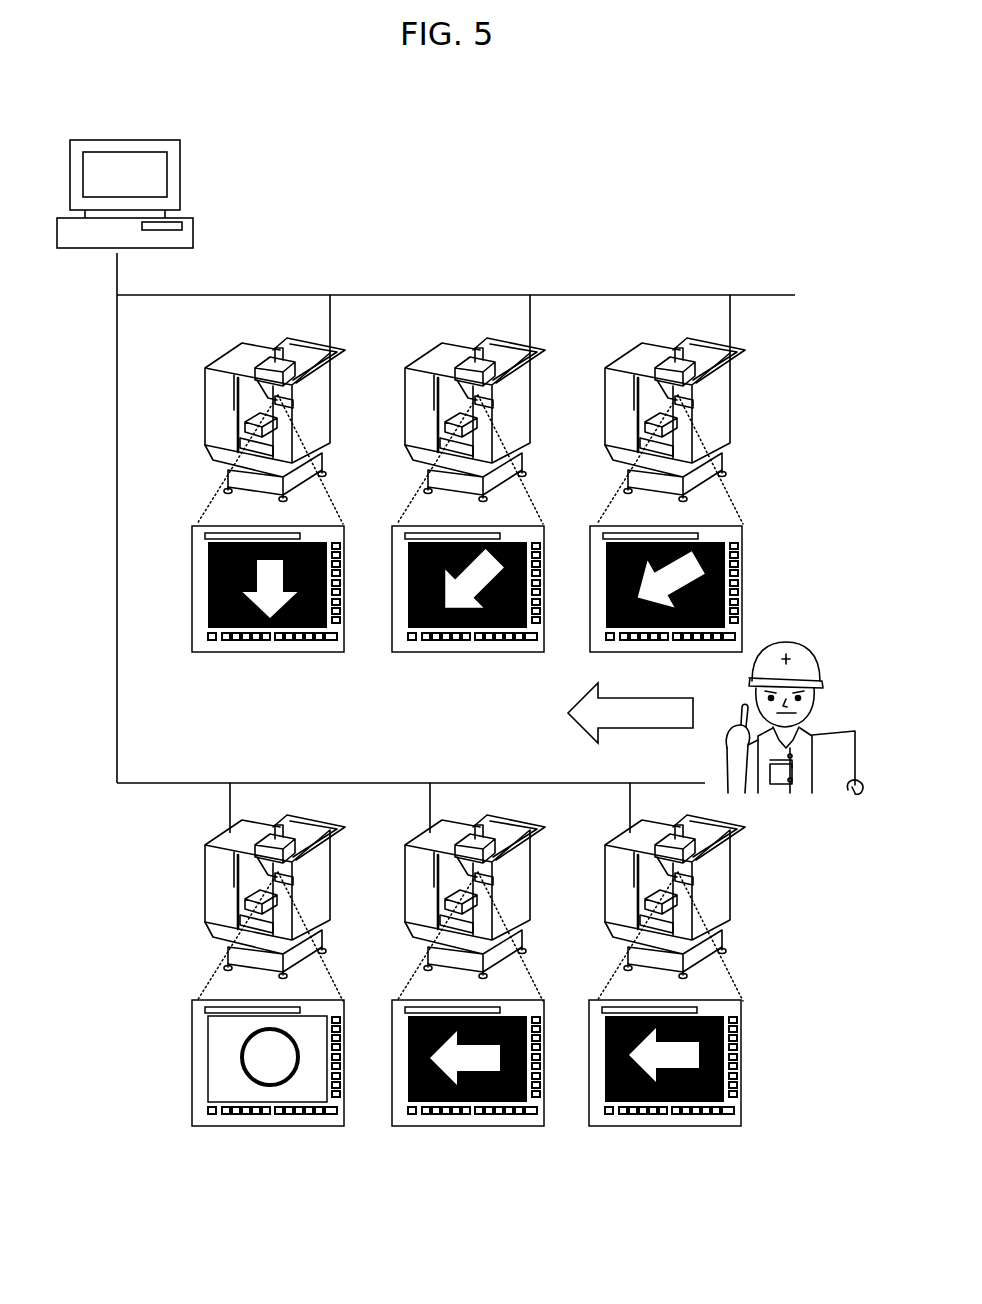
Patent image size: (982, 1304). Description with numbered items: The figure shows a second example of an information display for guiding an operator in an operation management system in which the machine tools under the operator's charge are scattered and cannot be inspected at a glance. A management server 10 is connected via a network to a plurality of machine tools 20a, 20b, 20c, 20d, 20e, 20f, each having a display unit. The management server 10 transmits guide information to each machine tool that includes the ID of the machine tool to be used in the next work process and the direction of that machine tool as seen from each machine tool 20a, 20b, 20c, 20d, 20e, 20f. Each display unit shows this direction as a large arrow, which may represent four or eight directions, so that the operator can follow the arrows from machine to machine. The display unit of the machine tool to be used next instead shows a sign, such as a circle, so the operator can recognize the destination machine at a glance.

The management server 10 is at (181, 186).
The machine tool 20a is at (205, 447).
The machine tool 20b is at (405, 447).
The machine tool 20c is at (605, 447).
The machine tool 20d is at (205, 924).
The machine tool 20e is at (405, 924).
The machine tool 20f is at (605, 924).